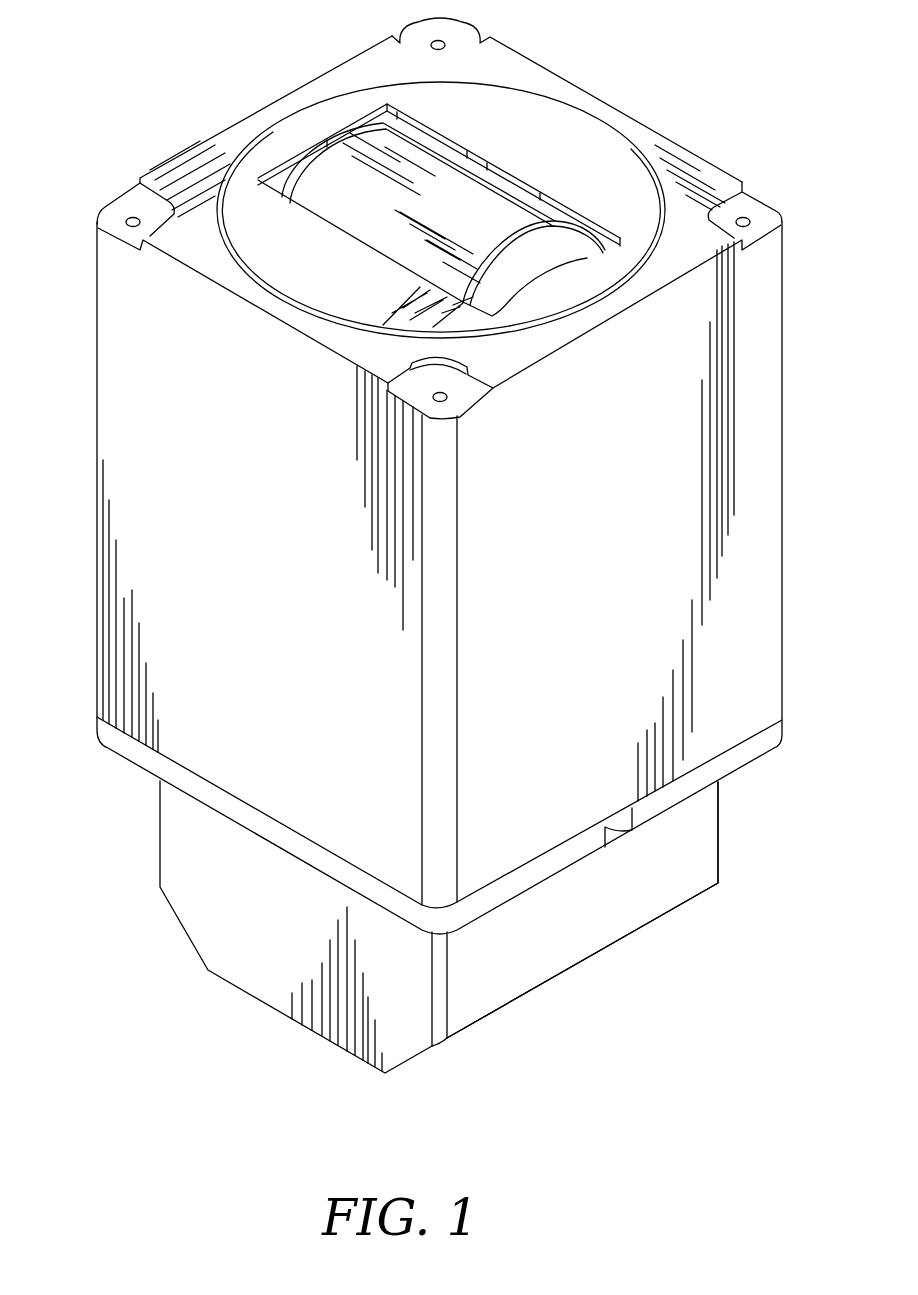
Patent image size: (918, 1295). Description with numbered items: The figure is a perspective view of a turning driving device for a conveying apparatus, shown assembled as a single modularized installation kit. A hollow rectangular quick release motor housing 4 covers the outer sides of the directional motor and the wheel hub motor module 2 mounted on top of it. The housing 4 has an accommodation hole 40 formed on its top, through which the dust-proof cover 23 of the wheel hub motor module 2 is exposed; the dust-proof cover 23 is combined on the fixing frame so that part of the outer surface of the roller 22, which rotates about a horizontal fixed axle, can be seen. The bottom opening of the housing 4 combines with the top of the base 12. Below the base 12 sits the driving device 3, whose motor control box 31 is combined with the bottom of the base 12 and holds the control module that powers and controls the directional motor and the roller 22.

The wheel hub motor module 2 is at (495, 168).
The driving device 3 is at (446, 927).
The quick release motor housing 4 is at (68, 563).
The base 12 is at (158, 763).
The roller 22 is at (507, 222).
The dust-proof cover 23 is at (464, 164).
The motor control box 31 is at (643, 890).
The accommodation hole 40 is at (284, 112).